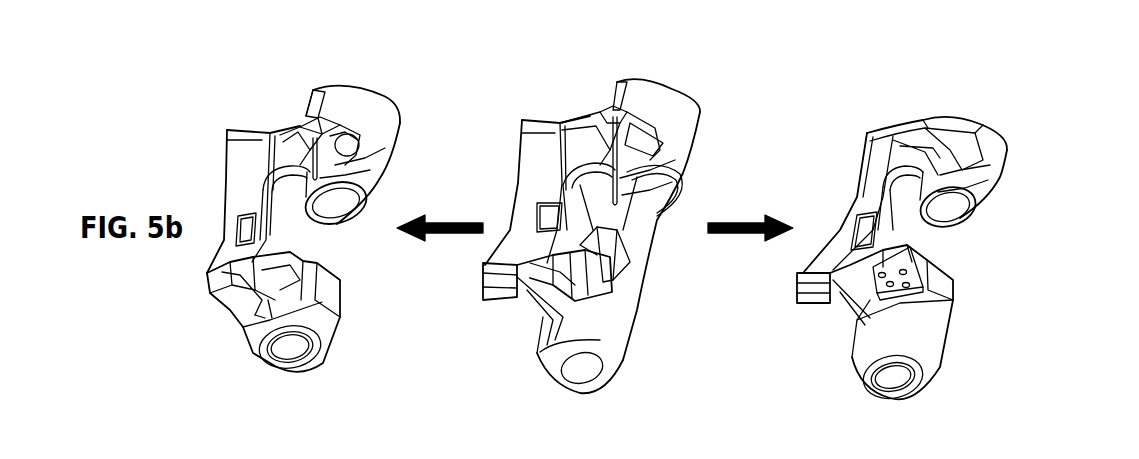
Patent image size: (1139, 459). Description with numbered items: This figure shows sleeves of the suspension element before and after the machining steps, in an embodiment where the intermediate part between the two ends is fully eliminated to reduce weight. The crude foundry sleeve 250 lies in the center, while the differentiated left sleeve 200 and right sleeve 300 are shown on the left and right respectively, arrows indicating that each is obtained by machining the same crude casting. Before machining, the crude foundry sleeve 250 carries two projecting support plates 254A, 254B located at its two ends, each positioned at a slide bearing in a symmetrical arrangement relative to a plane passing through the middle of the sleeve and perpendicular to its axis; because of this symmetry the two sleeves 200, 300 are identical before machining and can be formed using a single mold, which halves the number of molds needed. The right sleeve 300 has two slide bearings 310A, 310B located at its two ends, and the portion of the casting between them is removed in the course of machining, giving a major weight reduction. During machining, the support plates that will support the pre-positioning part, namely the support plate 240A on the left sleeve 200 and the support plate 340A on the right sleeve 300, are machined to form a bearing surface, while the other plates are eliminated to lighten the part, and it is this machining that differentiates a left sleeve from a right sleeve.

The sleeve 200 is at (405, 137).
The support plate 240A is at (317, 127).
The crude foundry sleeve 250 is at (703, 128).
The support plate 254A is at (613, 112).
The support plate 254B is at (610, 268).
The sleeve 300 is at (1013, 177).
The slide bearing 310A is at (997, 155).
The slide bearing 310B is at (937, 343).
The support plate 340A is at (880, 283).